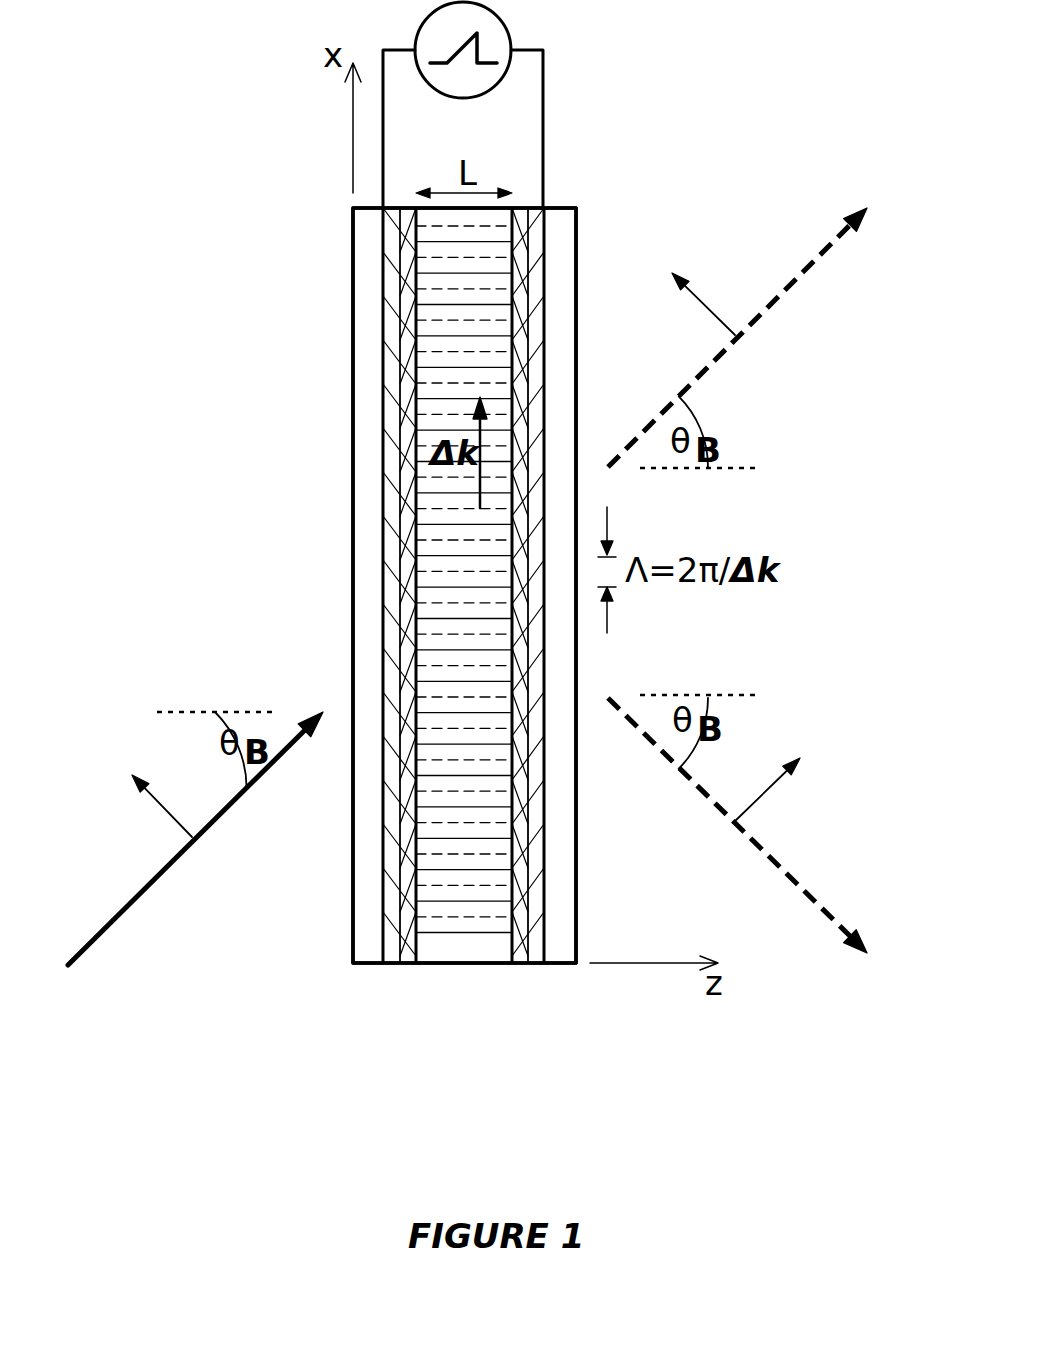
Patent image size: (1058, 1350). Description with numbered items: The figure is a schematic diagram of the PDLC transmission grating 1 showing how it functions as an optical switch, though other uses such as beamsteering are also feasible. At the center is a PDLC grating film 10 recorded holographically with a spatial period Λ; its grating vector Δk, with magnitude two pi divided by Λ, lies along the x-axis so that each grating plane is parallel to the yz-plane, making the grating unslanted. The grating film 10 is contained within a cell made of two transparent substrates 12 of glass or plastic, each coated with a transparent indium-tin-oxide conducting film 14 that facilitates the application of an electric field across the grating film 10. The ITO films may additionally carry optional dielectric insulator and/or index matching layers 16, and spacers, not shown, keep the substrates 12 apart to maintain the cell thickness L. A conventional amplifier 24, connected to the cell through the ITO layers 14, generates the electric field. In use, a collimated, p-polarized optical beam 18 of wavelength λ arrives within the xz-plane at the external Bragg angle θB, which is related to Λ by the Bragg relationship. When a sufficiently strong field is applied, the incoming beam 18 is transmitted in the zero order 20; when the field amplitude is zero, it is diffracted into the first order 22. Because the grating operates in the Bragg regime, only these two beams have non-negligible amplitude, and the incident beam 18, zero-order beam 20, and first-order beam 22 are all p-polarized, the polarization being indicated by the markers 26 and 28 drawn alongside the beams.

The PDLC transmission grating 1 is at (273, 358).
The PDLC grating film 10 is at (464, 579).
The transparent substrates 12 is at (370, 902).
The ITO conducting film 14 is at (395, 918).
The dielectric insulator and/or index matching layers 16 is at (409, 963).
The incident optical beam 18 is at (185, 838).
The zero-order beam 20 is at (765, 318).
The first-order diffracted beam 22 is at (765, 847).
The amplifier 24 is at (478, 104).
The polarization direction of incident beam 26 is at (403, 531).
The polarization direction of diffracted beam 28 is at (788, 768).